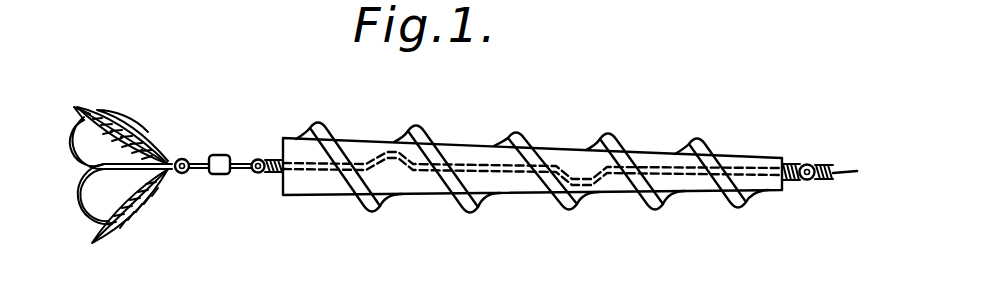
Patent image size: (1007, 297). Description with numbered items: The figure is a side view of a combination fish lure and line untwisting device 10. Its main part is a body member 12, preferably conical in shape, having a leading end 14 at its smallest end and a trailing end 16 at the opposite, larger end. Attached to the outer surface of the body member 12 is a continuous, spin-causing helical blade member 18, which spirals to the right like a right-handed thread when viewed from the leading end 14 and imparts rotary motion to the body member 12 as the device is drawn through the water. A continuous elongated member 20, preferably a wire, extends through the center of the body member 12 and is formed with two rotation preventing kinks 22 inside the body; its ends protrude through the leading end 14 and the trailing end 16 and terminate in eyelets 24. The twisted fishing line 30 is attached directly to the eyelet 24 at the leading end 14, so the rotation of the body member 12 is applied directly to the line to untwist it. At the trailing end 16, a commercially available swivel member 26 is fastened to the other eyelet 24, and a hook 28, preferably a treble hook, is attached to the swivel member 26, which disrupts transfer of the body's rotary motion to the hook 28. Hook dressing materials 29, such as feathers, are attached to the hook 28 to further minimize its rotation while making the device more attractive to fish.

The fish lure and line untwisting device 10 is at (648, 133).
The body member 12 is at (582, 141).
The leading end 14 is at (784, 157).
The trailing end 16 is at (283, 136).
The helical blade member 18 is at (415, 142).
The continuous elongated member 20 is at (485, 167).
The rotation preventing kink 22 is at (395, 160).
The eyelet 24 is at (258, 177).
The swivel member 26 is at (218, 155).
The hook 28 is at (80, 207).
The hook dressing materials 29 is at (157, 193).
The twisted fishing line 30 is at (848, 178).